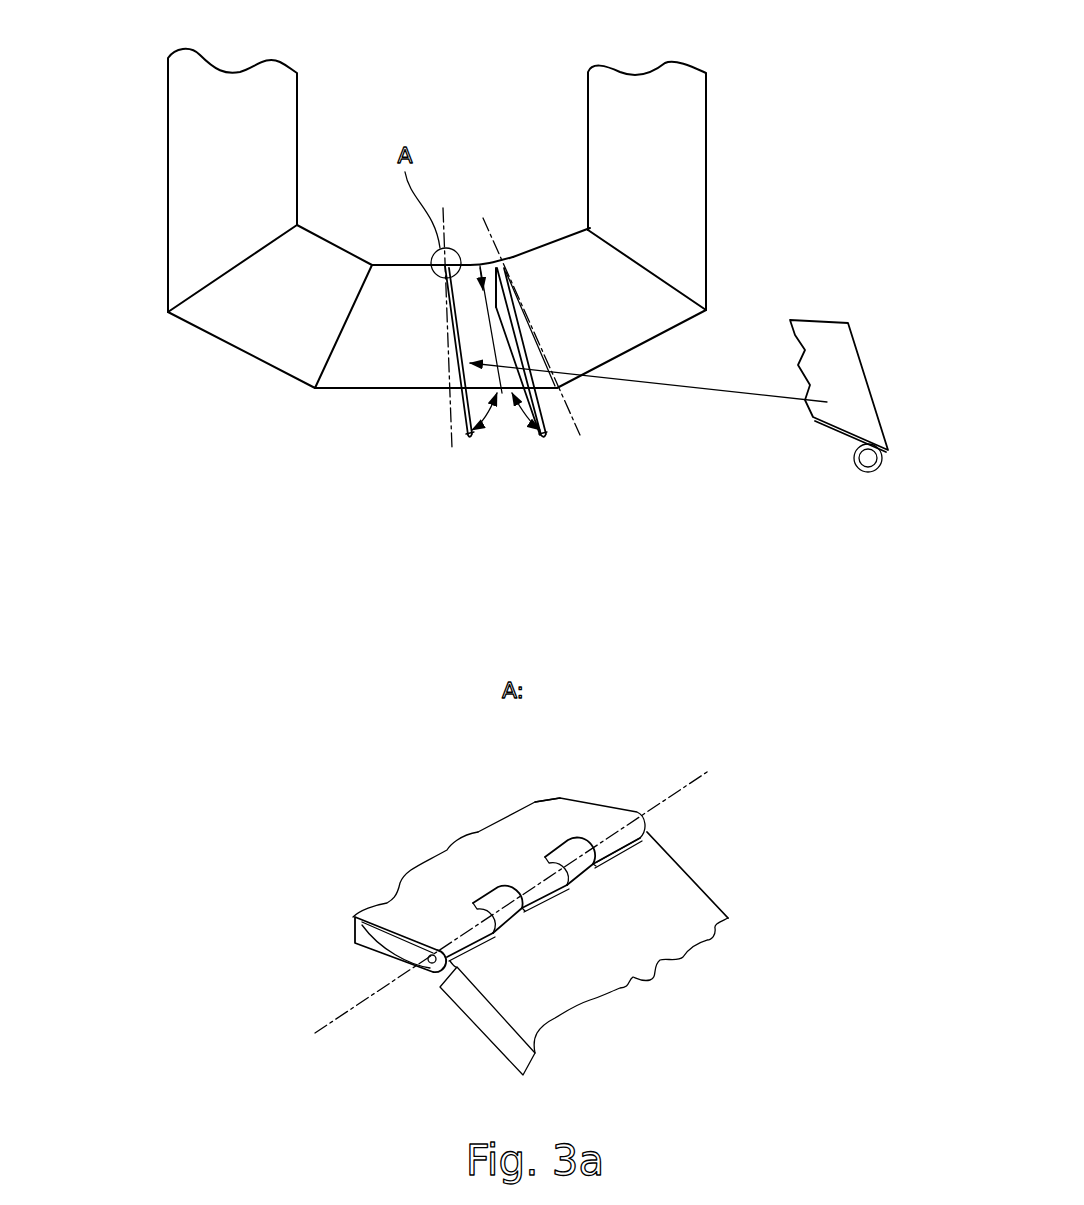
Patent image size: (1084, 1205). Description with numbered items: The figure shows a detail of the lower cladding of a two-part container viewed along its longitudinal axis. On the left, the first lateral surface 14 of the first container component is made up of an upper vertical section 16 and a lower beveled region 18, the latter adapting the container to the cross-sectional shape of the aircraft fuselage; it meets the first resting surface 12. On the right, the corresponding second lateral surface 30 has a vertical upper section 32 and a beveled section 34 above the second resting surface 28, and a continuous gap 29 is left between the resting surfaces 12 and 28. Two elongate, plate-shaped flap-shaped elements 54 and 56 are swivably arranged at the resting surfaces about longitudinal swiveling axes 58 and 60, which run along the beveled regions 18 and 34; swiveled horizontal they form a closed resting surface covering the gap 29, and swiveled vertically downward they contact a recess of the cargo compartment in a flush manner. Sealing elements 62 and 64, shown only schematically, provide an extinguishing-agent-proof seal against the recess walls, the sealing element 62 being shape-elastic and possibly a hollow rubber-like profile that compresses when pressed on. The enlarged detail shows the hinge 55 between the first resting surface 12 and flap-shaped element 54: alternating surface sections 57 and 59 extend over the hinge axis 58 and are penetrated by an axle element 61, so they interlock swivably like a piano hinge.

The first resting surface 12 is at (382, 365).
The first lateral surface 14 is at (148, 225).
The upper vertical section 16 is at (162, 123).
The lower beveled region 18 is at (277, 318).
The second resting surface 28 is at (567, 388).
The continuous gap 29 is at (535, 254).
The second lateral surface 30 is at (733, 213).
The upper section 32 is at (716, 152).
The beveled section 34 is at (577, 311).
The flap-shaped element 54 is at (453, 317).
The hinge 55 is at (467, 877).
The flap-shaped element 56 is at (540, 400).
The surface section 57 is at (530, 887).
The swiveling axis 58 is at (440, 432).
The surface section 59 is at (515, 915).
The swiveling axis 60 is at (578, 430).
The axle element 61 is at (357, 915).
The sealing element 62 is at (468, 440).
The sealing element 64 is at (527, 448).